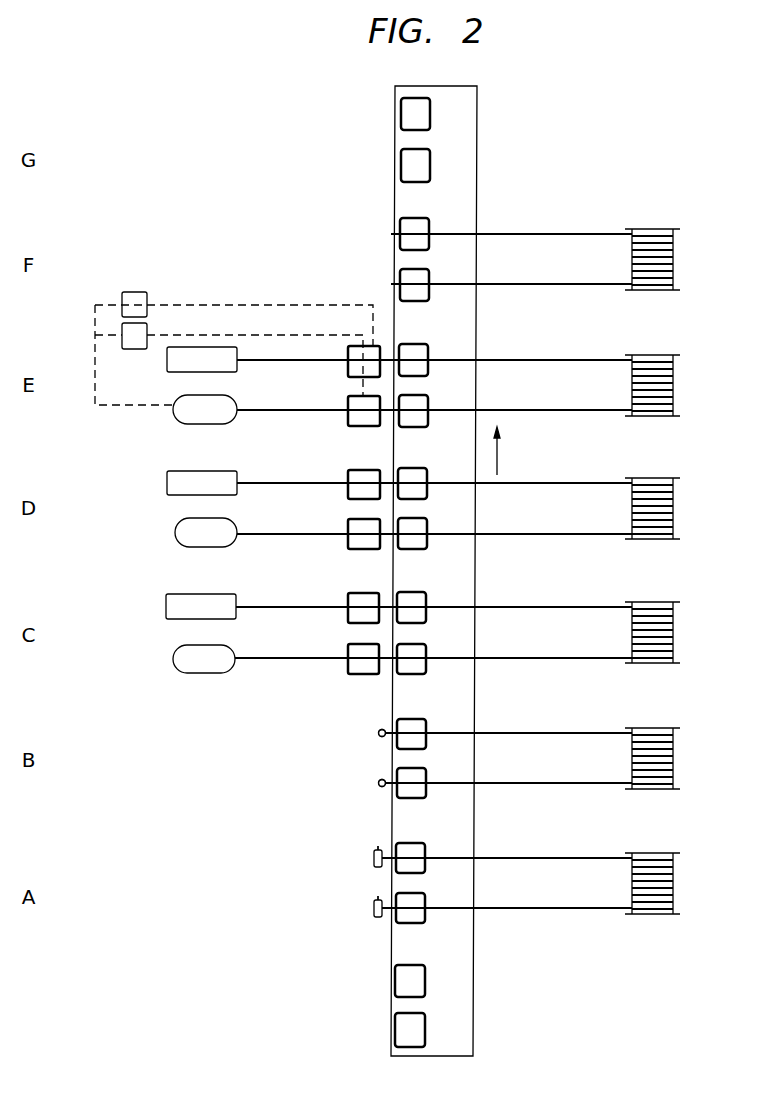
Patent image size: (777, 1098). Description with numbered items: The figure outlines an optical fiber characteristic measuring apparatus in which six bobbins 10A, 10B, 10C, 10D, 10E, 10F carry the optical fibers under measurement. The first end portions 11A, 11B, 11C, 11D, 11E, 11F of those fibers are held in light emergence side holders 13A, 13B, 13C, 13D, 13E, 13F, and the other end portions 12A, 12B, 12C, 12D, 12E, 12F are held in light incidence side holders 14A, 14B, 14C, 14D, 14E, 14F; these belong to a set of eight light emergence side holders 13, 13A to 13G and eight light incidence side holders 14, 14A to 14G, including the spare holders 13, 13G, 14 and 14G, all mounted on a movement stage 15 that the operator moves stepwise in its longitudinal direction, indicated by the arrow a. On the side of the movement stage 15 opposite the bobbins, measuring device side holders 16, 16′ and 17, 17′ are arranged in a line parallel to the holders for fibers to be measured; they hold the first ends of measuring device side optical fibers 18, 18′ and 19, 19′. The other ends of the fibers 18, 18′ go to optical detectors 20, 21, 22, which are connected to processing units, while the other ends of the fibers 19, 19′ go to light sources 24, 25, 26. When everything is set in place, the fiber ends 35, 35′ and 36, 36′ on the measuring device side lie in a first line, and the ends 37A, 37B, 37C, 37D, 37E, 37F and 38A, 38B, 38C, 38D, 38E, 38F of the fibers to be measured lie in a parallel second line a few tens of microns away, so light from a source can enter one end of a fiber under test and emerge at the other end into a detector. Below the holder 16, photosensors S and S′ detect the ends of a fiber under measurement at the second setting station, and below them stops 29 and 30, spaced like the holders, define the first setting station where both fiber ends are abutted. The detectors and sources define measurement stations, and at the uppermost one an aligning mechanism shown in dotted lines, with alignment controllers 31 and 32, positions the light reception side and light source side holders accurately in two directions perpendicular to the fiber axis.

The bobbin 10A is at (674, 888).
The bobbin 10B is at (674, 763).
The bobbin 10C is at (674, 637).
The bobbin 10D is at (674, 513).
The bobbin 10E is at (674, 390).
The bobbin 10F is at (674, 264).
The first end portion 11A is at (542, 909).
The first end portion 11B is at (542, 784).
The first end portion 11C is at (542, 659).
The first end portion 11D is at (542, 535).
The first end portion 11E is at (542, 411).
The first end portion 11F is at (542, 285).
The other end portion 12A is at (575, 857).
The other end portion 12B is at (575, 732).
The other end portion 12C is at (575, 606).
The other end portion 12D is at (575, 482).
The other end portion 12E is at (575, 359).
The other end portion 12F is at (575, 233).
The light emergence side holder 13 is at (415, 1013).
The light emergence side holder 13A is at (420, 893).
The light emergence side holder 13B is at (420, 768).
The light emergence side holder 13C is at (422, 644).
The light emergence side holder 13D is at (422, 518).
The light emergence side holder 13E is at (422, 395).
The light emergence side holder 13F is at (422, 269).
The light emergence side holder 13G is at (418, 181).
The light incidence side holder 14 is at (415, 965).
The light incidence side holder 14A is at (420, 843).
The light incidence side holder 14B is at (420, 719).
The light incidence side holder 14C is at (422, 592).
The light incidence side holder 14D is at (422, 468).
The light incidence side holder 14E is at (422, 344).
The light incidence side holder 14F is at (422, 218).
The light incidence side holder 14G is at (428, 128).
The movement stage 15 is at (474, 1034).
The measuring device side holder 16 is at (352, 675).
The measuring device side holder 16′ is at (346, 549).
The measuring device side holder 17 is at (350, 623).
The measuring device side holder 17′ is at (350, 498).
The measuring device side optical fiber 18 is at (279, 659).
The measuring device side optical fiber 18′ is at (279, 534).
The measuring device side optical fiber 19 is at (281, 609).
The measuring device side optical fiber 19′ is at (276, 484).
The optical detector 20 is at (222, 675).
The optical detector 21 is at (229, 547).
The optical detector 22 is at (222, 424).
The light source 24 is at (226, 619).
The light source 25 is at (226, 495).
The light source 26 is at (230, 372).
The stop 29 is at (372, 914).
The stop 30 is at (372, 858).
The alignment controller 31 is at (135, 349).
The alignment controller 32 is at (135, 292).
The end of measuring device side optical fiber 35 is at (389, 680).
The end of measuring device side optical fiber 35′ is at (389, 539).
The end of measuring device side optical fiber 36 is at (388, 606).
The end of measuring device side optical fiber 36′ is at (388, 482).
The end of optical fiber to be measured 37A is at (374, 902).
The end of optical fiber to be measured 37B is at (380, 787).
The end of optical fiber to be measured 37C is at (391, 664).
The end of optical fiber to be measured 37D is at (391, 538).
The end of optical fiber to be measured 37E is at (391, 413).
The end of optical fiber to be measured 37F is at (391, 284).
The end of optical fiber to be measured 38A is at (374, 848).
The end of optical fiber to be measured 38B is at (380, 737).
The end of optical fiber to be measured 38C is at (393, 617).
The end of optical fiber to be measured 38D is at (393, 492).
The end of optical fiber to be measured 38E is at (393, 348).
The end of optical fiber to be measured 38F is at (391, 234).
The photosensor S is at (378, 783).
The photosensor S′ is at (378, 733).
The arrow a is at (500, 471).